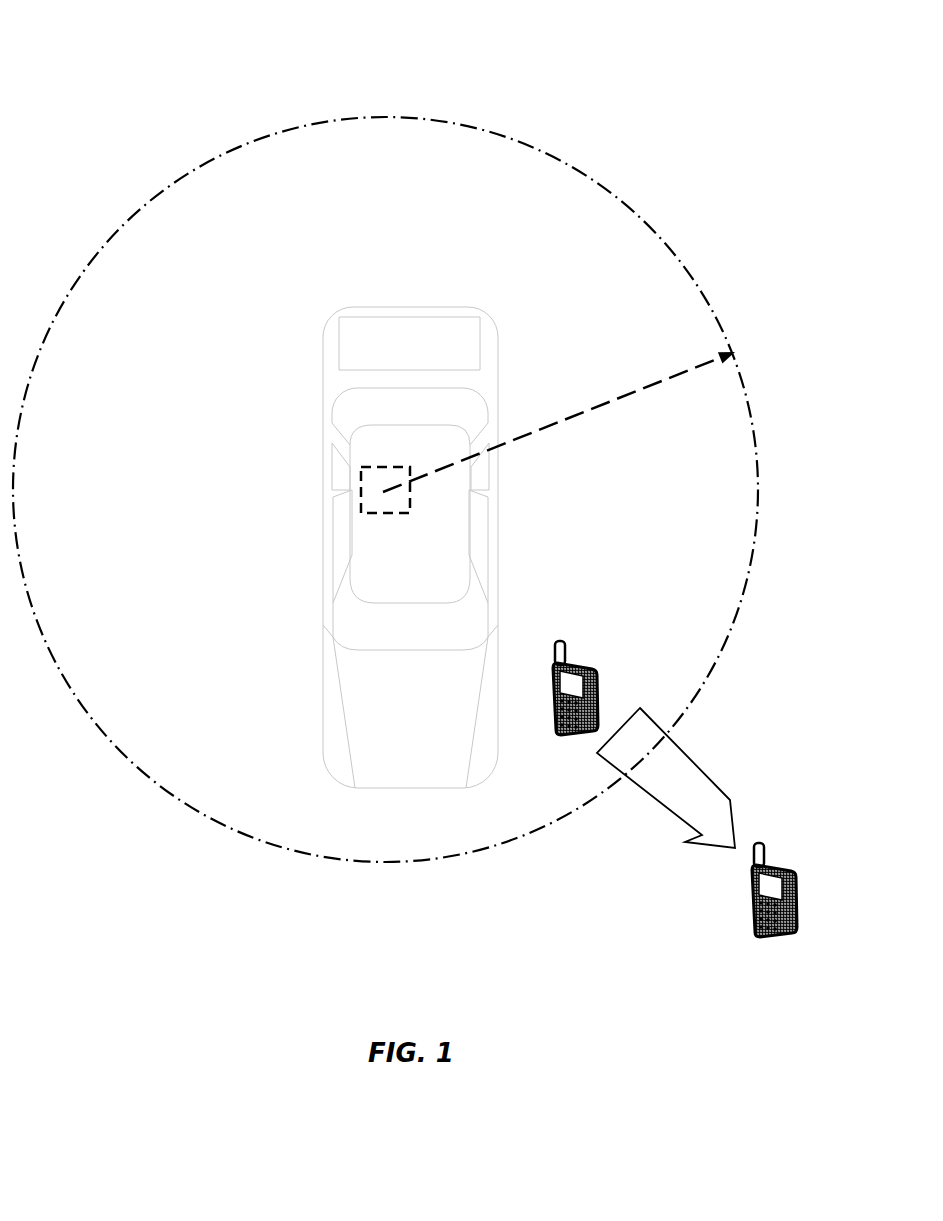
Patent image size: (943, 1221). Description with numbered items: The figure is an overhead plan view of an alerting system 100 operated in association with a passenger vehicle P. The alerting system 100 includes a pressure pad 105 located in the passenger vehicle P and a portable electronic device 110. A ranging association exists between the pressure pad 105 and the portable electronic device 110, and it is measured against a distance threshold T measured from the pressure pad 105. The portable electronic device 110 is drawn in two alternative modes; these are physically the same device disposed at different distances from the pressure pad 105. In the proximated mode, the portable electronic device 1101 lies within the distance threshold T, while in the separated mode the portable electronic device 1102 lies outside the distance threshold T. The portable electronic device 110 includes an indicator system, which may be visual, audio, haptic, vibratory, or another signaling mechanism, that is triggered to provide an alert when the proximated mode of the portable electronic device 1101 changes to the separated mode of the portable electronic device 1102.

The alerting system 100 is at (577, 52).
The pressure pad 105 is at (362, 482).
The portable electronic device 110 is at (705, 781).
The portable electronic device in proximated mode 1101 is at (600, 670).
The portable electronic device in separated mode 1102 is at (787, 867).
The passenger vehicle P is at (488, 340).
The distance threshold T is at (580, 413).